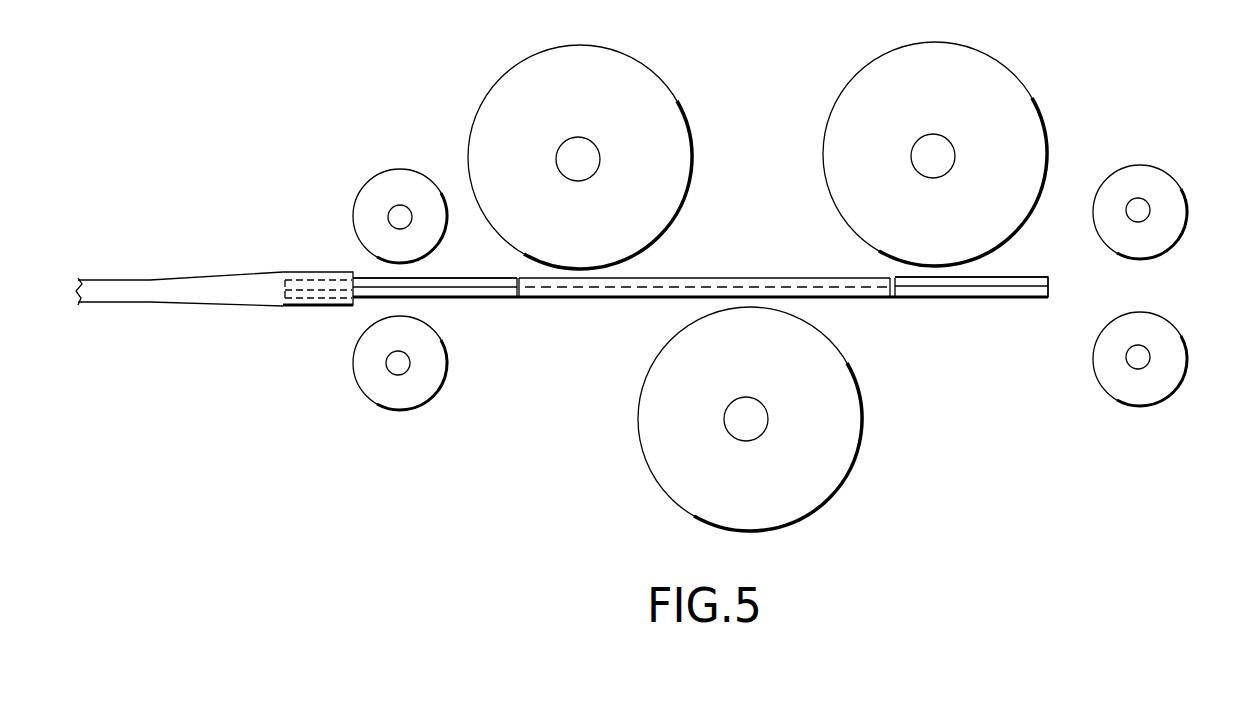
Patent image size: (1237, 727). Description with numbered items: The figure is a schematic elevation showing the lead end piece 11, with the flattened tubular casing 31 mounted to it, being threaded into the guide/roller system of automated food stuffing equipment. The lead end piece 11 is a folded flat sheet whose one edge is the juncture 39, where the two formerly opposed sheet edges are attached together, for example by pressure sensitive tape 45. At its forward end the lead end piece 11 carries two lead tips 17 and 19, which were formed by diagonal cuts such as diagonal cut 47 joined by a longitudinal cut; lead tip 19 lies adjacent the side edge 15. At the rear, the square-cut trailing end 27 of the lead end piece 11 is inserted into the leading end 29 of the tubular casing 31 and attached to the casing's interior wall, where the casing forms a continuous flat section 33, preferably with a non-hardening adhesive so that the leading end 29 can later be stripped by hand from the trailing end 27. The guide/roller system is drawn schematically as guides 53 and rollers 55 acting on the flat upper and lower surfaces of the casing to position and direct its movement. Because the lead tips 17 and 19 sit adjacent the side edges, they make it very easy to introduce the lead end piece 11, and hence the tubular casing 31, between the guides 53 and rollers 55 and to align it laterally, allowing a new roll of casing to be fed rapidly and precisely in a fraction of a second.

The lead end piece 11 is at (487, 294).
The side edge 15 is at (996, 276).
The lead tip 17 is at (1050, 300).
The lead tip 19 is at (1052, 280).
The trailing end 27 is at (283, 292).
The leading end 29 is at (362, 276).
The tubular casing 31 is at (117, 268).
The continuous flat section 33 is at (112, 304).
The juncture 39 is at (460, 284).
The pressure sensitive tape 45 is at (557, 296).
The diagonal cut 47 is at (948, 298).
The guides 53 is at (396, 184).
The rollers 55 is at (640, 74).